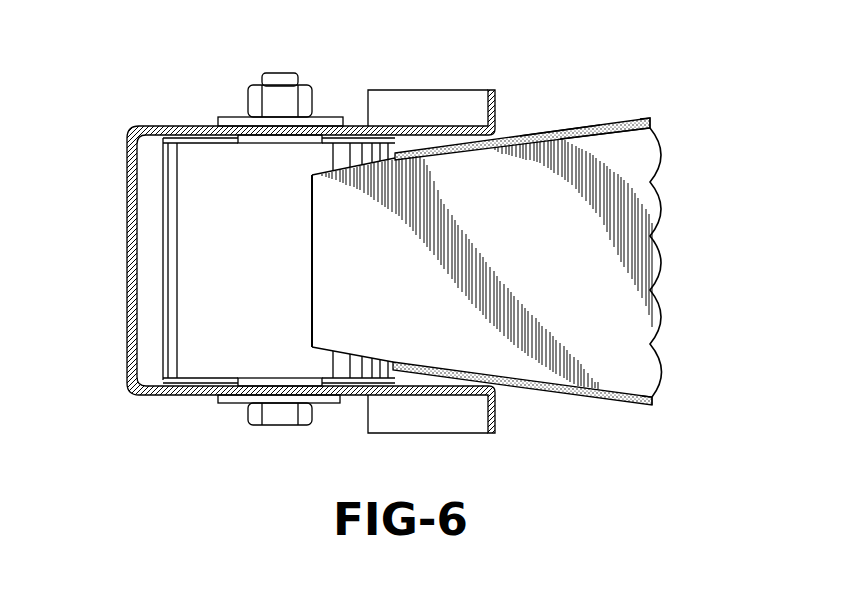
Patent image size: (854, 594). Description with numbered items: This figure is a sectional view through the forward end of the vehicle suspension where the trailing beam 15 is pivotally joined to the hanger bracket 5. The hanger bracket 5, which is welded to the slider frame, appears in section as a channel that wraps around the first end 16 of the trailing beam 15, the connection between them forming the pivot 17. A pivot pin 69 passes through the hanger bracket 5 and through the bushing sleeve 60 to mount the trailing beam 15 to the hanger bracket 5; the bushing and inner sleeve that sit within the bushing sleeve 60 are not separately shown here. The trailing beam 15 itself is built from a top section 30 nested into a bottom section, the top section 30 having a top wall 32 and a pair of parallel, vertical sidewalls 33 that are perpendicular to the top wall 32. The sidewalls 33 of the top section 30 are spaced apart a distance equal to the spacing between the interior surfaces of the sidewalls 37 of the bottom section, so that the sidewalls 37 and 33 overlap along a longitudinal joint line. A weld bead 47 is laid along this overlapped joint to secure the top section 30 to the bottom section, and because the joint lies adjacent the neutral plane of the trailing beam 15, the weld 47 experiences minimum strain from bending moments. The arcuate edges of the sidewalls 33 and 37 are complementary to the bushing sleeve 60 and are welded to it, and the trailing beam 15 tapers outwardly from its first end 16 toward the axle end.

The hanger bracket 5 is at (183, 124).
The trailing beam 15 is at (546, 134).
The first end of trailing beam 16 is at (361, 347).
The pivot 17 is at (245, 403).
The top section 30 is at (648, 161).
The top wall 32 is at (610, 147).
The sidewall of top section 33 is at (646, 119).
The sidewall of bottom section 37 is at (580, 128).
The weld bead 47 is at (446, 147).
The bushing sleeve 60 is at (195, 258).
The pivot pin 69 is at (280, 426).